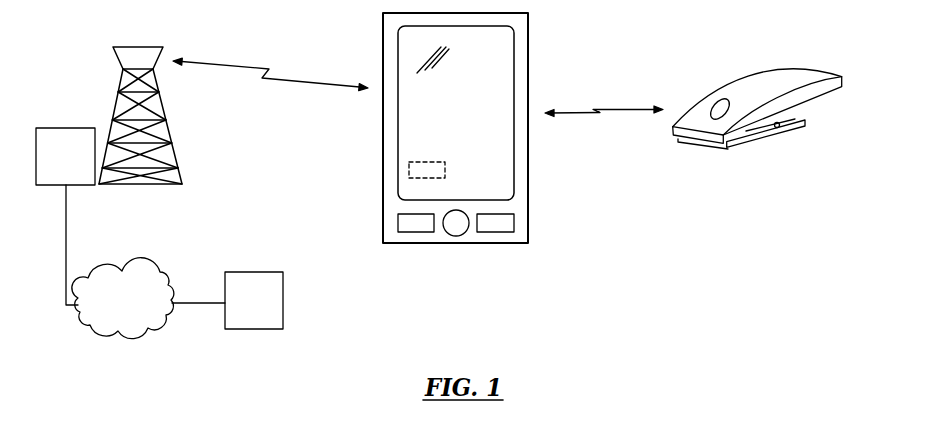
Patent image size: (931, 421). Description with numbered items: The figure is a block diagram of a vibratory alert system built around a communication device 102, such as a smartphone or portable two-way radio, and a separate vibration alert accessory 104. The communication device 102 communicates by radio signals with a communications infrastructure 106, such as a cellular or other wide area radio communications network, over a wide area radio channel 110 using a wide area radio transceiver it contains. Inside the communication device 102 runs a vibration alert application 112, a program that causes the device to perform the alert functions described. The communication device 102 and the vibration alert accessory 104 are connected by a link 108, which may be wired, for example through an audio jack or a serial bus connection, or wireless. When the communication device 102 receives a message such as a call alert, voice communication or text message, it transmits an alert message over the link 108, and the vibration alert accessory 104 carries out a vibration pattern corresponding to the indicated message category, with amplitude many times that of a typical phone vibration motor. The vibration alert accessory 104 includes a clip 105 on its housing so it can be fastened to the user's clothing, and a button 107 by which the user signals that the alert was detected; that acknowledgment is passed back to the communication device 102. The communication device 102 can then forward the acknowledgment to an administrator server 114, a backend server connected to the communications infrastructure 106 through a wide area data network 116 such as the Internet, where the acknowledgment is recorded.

The communication device 102 is at (435, 147).
The vibration alert accessory 104 is at (757, 91).
The clip 105 is at (757, 145).
The communications infrastructure 106 is at (72, 186).
The button 107 is at (722, 98).
The link 108 is at (618, 110).
The wide area radio channel 110 is at (253, 67).
The vibration alert application 112 is at (409, 171).
The administrator server 114 is at (247, 272).
The wide area data network 116 is at (150, 277).